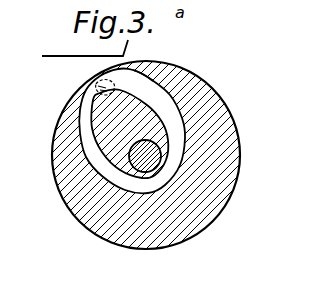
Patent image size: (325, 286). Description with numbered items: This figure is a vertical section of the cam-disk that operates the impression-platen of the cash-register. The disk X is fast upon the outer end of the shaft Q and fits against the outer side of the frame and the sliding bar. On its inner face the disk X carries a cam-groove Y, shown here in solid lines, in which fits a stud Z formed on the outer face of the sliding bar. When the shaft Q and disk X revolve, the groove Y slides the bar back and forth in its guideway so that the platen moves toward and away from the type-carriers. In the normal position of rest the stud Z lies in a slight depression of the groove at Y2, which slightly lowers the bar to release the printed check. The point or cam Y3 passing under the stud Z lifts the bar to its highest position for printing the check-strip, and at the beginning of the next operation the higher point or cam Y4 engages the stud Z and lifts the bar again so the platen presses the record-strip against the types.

The disk X is at (56, 173).
The cam-groove Y is at (81, 122).
The depression of the groove Y2 is at (146, 155).
The point or cam Y3 is at (95, 100).
The point or cam Y4 is at (143, 82).
The stud Z is at (101, 87).
The shaft Q is at (162, 150).